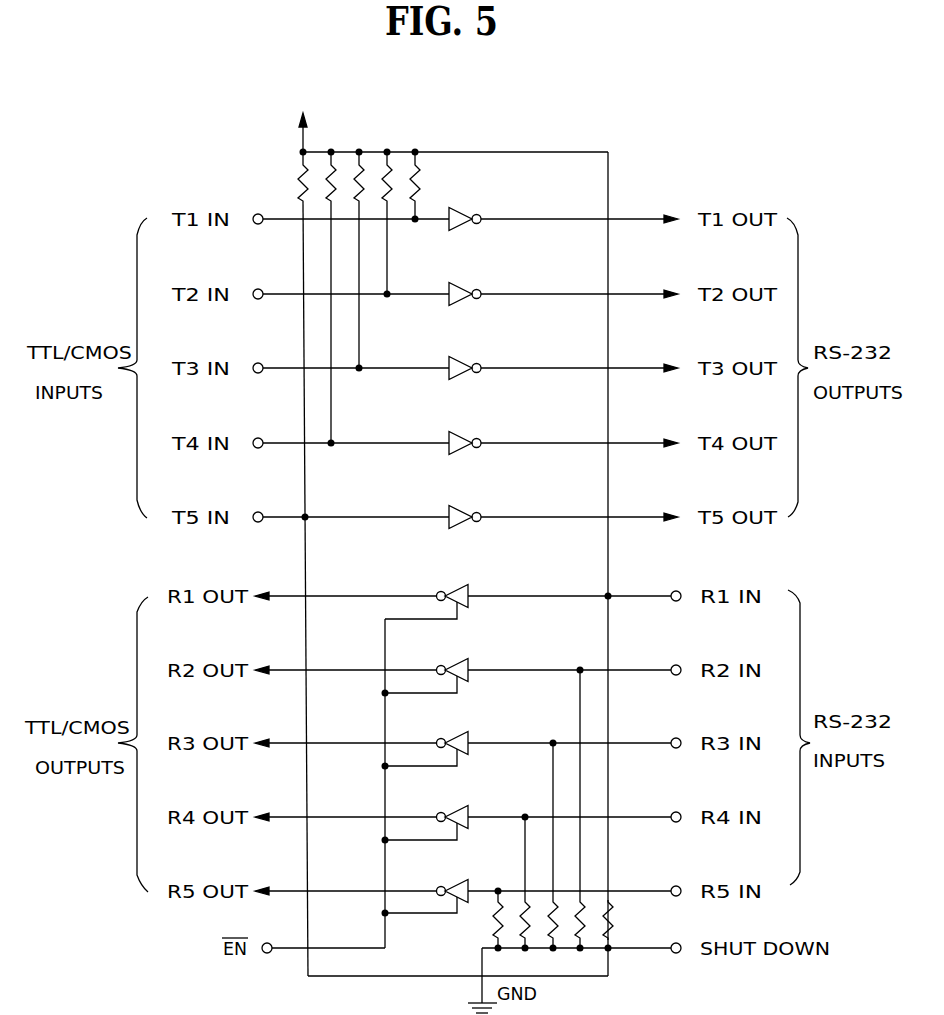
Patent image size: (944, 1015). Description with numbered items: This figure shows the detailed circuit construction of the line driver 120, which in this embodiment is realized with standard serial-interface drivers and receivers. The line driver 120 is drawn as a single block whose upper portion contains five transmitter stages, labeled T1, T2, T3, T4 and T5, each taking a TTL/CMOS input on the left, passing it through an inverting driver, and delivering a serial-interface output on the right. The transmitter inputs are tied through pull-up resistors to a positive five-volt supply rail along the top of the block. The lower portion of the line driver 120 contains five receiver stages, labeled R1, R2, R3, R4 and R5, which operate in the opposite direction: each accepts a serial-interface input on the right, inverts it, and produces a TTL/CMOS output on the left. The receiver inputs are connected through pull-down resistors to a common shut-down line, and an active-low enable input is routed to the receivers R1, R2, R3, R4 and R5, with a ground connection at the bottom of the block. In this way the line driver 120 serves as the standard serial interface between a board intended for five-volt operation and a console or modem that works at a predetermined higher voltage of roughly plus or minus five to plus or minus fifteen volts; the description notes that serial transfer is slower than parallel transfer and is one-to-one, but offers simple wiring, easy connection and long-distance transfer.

The line driver 120 is at (608, 182).
The transmitter driver 1 T1 is at (465, 208).
The transmitter driver 2 T2 is at (465, 283).
The transmitter driver 3 T3 is at (465, 357).
The transmitter driver 4 T4 is at (465, 432).
The transmitter driver 5 T5 is at (465, 506).
The receiver 1 R1 is at (468, 589).
The receiver 2 R2 is at (468, 663).
The receiver 3 R3 is at (468, 736).
The receiver 4 R4 is at (468, 810).
The receiver 5 R5 is at (468, 883).